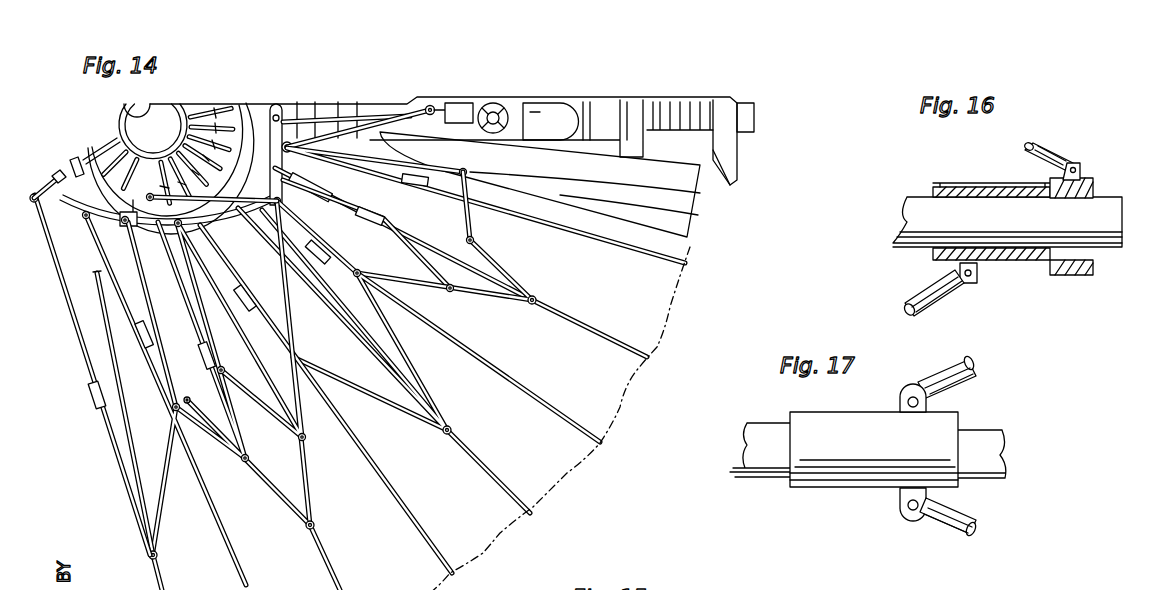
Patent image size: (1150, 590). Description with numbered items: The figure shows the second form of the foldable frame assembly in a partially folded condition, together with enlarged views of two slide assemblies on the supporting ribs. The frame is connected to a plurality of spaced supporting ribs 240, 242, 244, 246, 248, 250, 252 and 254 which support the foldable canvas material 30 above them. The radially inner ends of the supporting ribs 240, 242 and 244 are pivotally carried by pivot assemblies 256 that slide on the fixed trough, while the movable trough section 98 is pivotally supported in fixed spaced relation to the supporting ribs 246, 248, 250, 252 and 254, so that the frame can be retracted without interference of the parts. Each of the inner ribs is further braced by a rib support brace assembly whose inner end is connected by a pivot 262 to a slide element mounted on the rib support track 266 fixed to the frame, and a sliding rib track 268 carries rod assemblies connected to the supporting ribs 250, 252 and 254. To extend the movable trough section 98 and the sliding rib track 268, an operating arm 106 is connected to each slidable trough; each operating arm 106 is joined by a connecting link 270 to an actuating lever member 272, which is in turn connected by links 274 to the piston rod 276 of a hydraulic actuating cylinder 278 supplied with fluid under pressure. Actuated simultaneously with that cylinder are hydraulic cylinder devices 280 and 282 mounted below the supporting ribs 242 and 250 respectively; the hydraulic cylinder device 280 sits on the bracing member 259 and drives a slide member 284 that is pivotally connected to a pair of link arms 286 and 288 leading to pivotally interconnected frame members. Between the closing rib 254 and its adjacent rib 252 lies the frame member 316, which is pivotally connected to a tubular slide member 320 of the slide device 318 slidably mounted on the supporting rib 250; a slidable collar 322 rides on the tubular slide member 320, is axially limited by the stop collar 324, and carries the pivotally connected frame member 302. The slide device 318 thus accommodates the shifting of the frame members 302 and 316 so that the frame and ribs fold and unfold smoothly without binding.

In FIG. 14, the foldable canvas material 30 is at (687, 217).
In FIG. 14, the movable trough section 98 is at (89, 134).
In FIG. 14, the operating arm 106 is at (140, 170).
In FIG. 14, the pivot assembly 256 is at (208, 108).
In FIG. 14, the actuating lever member 272 is at (282, 128).
In FIG. 14, the link arm 288 is at (317, 105).
In FIG. 17, the link arm 288 is at (927, 527).
In FIG. 14, the link 274 is at (392, 120).
In FIG. 14, the piston rod 276 is at (440, 108).
In FIG. 14, the hydraulic actuating cylinder 278 is at (464, 103).
In FIG. 14, the supporting rib 240 is at (575, 237).
In FIG. 14, the supporting rib 242 is at (560, 317).
In FIG. 14, the supporting rib 244 is at (512, 377).
In FIG. 14, the supporting rib 246 is at (467, 442).
In FIG. 14, the supporting rib 248 is at (388, 477).
In FIG. 14, the supporting rib 250 is at (327, 543).
In FIG. 14, the supporting rib 252 is at (232, 543).
In FIG. 16, the supporting rib 252 is at (918, 213).
In FIG. 14, the closing rib member 254 is at (160, 570).
In FIG. 14, the pivot 262 is at (32, 195).
In FIG. 14, the rib support track 266 is at (140, 232).
In FIG. 14, the sliding rib track 268 is at (43, 182).
In FIG. 14, the connecting link 270 is at (215, 212).
In FIG. 14, the hydraulic cylinder device 280 is at (330, 184).
In FIG. 14, the hydraulic cylinder device 282 is at (352, 208).
In FIG. 14, the slide member 284 is at (374, 215).
In FIG. 17, the slide member 284 is at (865, 420).
In FIG. 16, the frame member 302 is at (1053, 158).
In FIG. 16, the frame member 316 is at (937, 292).
In FIG. 16, the slide device 318 is at (1010, 278).
In FIG. 16, the tubular slide member 320 is at (973, 187).
In FIG. 16, the slidable collar 322 is at (1070, 275).
In FIG. 16, the stop collar 324 is at (1087, 187).
In FIG. 17, the bracing member 259 is at (760, 470).
In FIG. 17, the link arm 286 is at (973, 371).